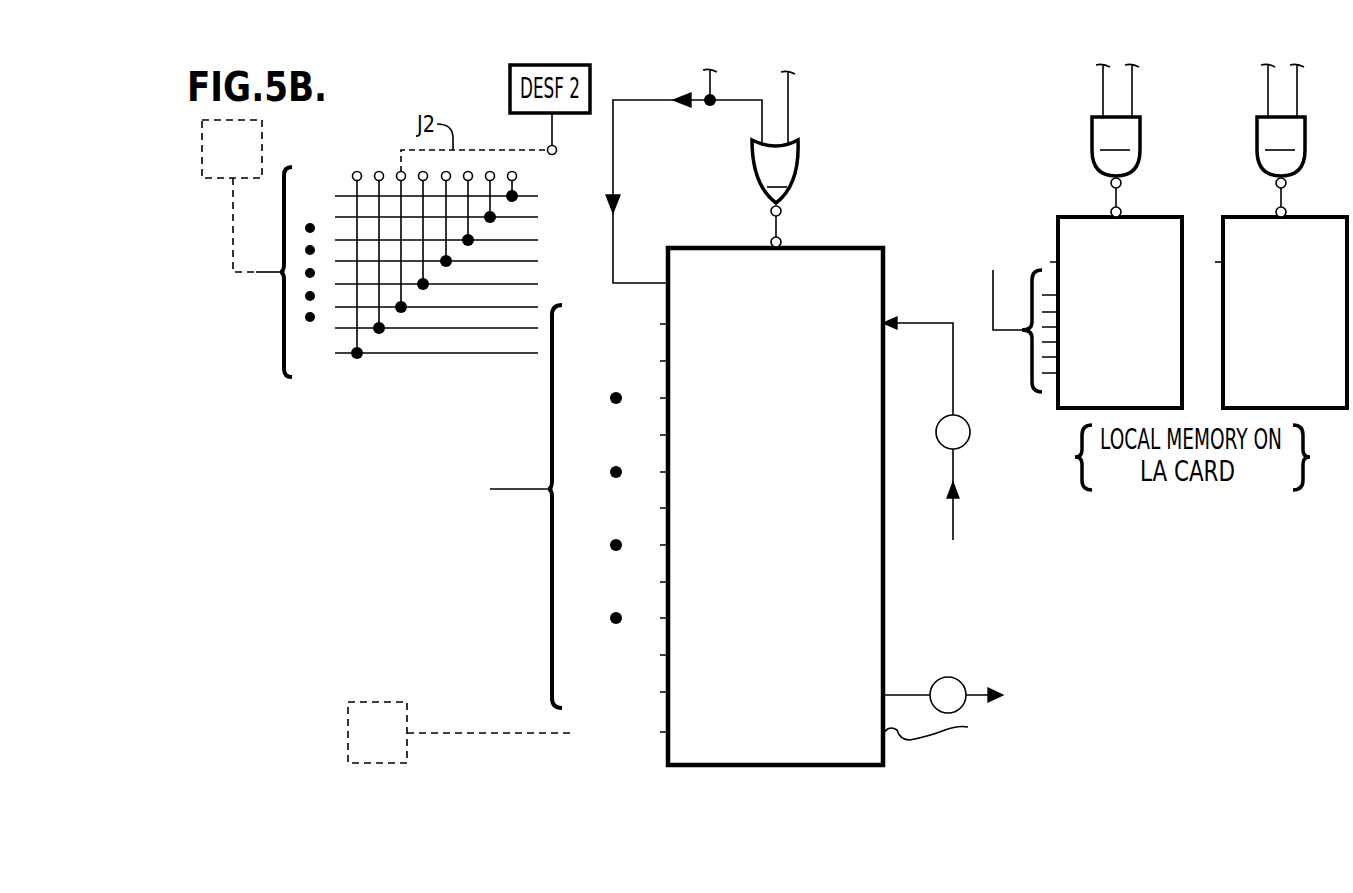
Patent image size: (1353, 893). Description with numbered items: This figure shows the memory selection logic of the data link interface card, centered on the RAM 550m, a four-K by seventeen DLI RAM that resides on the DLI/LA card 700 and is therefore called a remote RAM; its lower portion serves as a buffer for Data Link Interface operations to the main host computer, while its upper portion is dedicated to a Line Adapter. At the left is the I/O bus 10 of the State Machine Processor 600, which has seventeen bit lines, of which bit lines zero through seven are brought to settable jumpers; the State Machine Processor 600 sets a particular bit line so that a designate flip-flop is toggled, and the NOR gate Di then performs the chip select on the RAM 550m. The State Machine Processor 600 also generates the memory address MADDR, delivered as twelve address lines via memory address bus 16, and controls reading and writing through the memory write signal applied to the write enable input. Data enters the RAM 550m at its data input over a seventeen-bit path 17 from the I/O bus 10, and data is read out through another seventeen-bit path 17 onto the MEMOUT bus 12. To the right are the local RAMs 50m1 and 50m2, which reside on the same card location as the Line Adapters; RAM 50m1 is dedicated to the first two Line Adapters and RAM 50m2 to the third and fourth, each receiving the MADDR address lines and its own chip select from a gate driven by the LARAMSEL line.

The State Machine Processor 600 is at (248, 164).
The I/O bus 10 is at (257, 272).
The memory address bus 16 is at (427, 526).
The RAM 550m is at (813, 544).
The 17-bit data path 17 is at (950, 564).
The MEMOUT bus 12 is at (907, 693).
The Data Link Interface/Line Adapter card 700 is at (1041, 748).
The RAM 50m1 is at (1080, 236).
The RAM 50m2 is at (1281, 236).